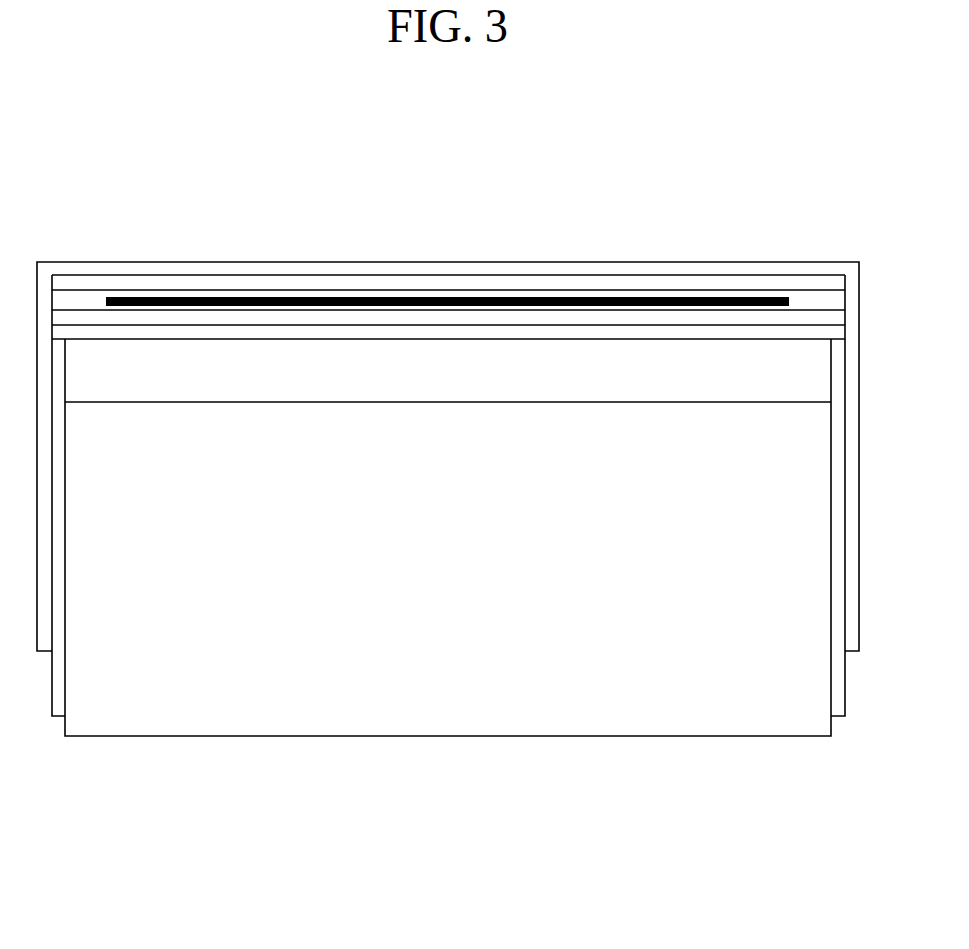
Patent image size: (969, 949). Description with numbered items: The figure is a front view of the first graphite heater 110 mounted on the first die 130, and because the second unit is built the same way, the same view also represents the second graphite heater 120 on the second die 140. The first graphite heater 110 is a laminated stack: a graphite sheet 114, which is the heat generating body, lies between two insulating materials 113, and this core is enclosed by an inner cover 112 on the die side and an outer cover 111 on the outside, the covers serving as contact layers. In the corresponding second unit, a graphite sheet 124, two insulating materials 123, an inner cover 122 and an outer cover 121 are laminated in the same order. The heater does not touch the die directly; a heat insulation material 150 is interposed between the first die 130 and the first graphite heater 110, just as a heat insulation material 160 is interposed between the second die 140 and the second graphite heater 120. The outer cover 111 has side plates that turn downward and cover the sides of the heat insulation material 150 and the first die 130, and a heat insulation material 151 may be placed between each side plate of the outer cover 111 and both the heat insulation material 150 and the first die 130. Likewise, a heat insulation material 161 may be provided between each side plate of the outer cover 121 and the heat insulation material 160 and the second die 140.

The first graphite heater 110 is at (448, 485).
The second graphite heater 120 is at (673, 244).
The outer cover 111 is at (448, 400).
The outer cover 121 is at (147, 268).
The inner cover 112 is at (448, 402).
The inner cover 122 is at (635, 332).
The insulating materials 113 is at (448, 339).
The insulating materials 123 is at (282, 283).
The graphite sheet 114 is at (447, 384).
The graphite sheet 124 is at (393, 306).
The first die 130 is at (448, 579).
The second die 140 is at (715, 705).
The heat insulation material 150 is at (448, 445).
The heat insulation material 160 is at (756, 382).
The heat insulation material 151 is at (448, 495).
The heat insulation material 161 is at (57, 592).